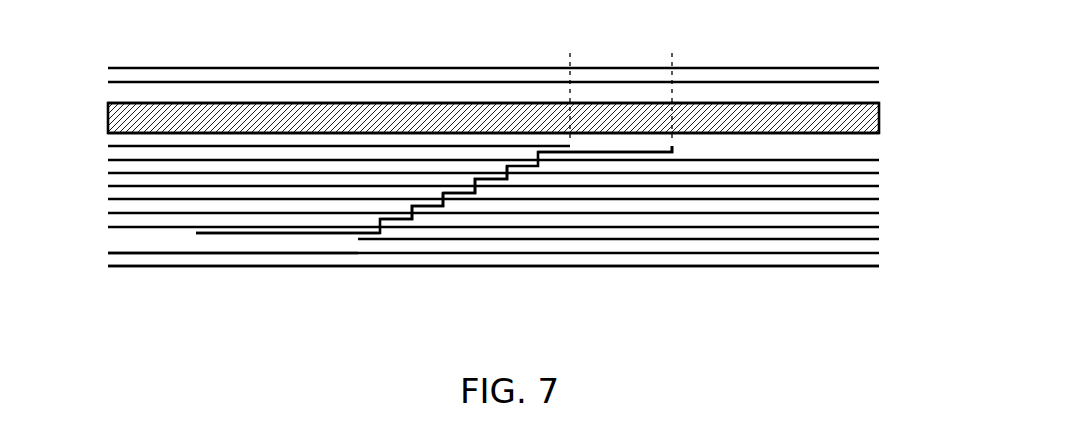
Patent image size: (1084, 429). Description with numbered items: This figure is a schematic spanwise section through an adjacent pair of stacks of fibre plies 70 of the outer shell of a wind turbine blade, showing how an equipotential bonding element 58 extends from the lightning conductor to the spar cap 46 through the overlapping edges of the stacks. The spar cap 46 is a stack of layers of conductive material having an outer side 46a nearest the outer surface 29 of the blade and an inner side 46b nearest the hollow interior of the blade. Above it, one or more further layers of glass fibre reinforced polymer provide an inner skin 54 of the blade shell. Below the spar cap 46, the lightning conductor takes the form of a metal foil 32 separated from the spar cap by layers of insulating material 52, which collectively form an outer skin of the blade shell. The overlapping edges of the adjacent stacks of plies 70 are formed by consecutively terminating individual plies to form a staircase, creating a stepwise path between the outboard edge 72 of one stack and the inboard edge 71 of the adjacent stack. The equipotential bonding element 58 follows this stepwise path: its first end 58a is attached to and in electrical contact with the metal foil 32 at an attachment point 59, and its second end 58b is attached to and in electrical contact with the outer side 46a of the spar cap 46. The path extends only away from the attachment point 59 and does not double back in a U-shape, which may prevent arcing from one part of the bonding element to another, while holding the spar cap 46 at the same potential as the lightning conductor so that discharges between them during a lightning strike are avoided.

The outer surface 29 is at (616, 283).
The metal foil 32 is at (700, 255).
The spar cap 46 is at (502, 125).
The outer side of spar cap 46a is at (868, 136).
The inner side of spar cap 46b is at (868, 98).
The layers of insulating material 52 is at (848, 268).
The inner skin 54 is at (898, 91).
The equipotential bonding element 58 is at (427, 172).
The first end of equipotential bonding element 58a is at (238, 236).
The second end of equipotential bonding element 58b is at (628, 150).
The attachment point 59 is at (270, 236).
The stack of fibre plies 70 is at (103, 153).
The inboard edge 71 is at (386, 192).
The outboard edge 72 is at (487, 210).